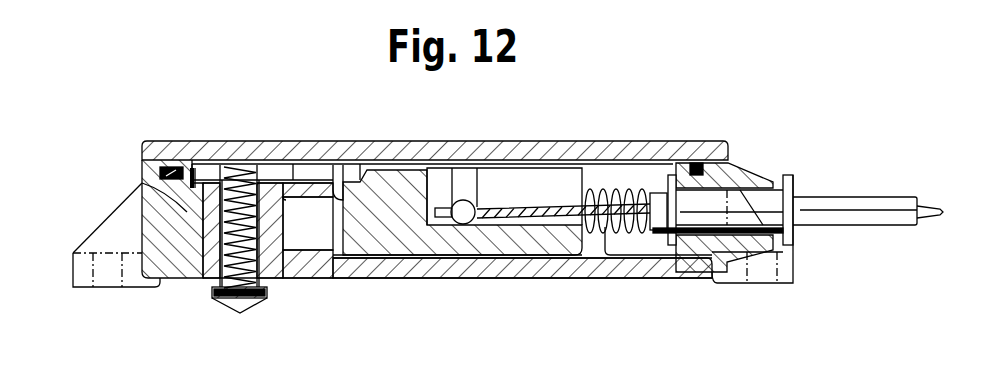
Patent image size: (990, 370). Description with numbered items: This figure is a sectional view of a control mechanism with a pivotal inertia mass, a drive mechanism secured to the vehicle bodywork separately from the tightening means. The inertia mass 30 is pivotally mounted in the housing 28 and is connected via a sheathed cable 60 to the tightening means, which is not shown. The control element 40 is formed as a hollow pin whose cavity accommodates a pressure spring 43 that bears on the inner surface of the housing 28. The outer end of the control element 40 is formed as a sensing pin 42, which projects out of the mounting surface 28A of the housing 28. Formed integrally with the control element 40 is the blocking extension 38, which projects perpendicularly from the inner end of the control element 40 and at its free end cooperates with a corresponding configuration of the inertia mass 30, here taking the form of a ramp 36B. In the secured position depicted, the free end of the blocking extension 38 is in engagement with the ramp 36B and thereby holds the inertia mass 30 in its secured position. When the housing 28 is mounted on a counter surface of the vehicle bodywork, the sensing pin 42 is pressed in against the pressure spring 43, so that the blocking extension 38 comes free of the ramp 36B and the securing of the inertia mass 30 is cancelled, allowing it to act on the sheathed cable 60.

The housing 28 is at (460, 156).
The mounting surface 28A is at (470, 280).
The inertia mass 30 is at (381, 250).
The ramp 36B is at (336, 187).
The blocking extension 38 is at (295, 187).
The control element 40 is at (142, 183).
The sensing pin 42 is at (258, 306).
The pressure spring 43 is at (229, 165).
The sheathed cable 60 is at (875, 217).